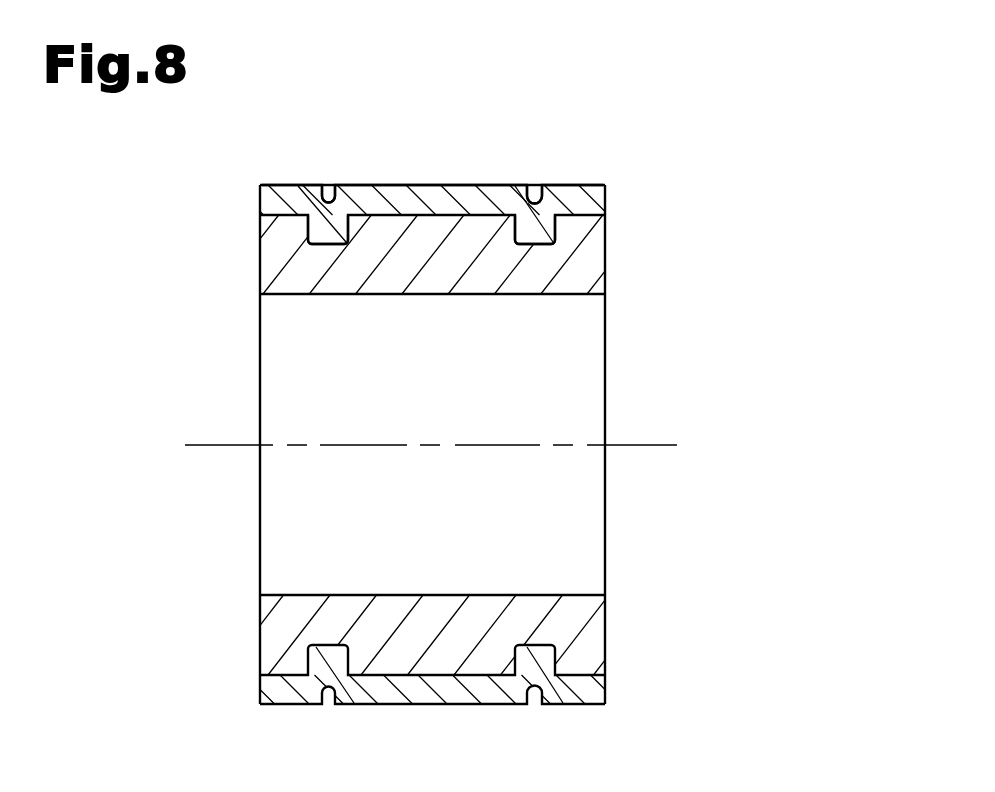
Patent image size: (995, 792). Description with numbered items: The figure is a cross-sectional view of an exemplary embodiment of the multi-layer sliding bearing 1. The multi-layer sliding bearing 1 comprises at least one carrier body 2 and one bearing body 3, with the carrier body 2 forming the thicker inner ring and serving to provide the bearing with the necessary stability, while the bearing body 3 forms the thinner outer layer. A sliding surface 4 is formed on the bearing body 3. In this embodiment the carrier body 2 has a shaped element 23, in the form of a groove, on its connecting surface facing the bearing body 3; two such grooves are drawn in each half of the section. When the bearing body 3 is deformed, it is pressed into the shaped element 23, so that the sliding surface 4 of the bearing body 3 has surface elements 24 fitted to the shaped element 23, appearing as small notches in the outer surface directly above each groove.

The multi-layer sliding bearing 1 is at (533, 365).
The carrier body 2 is at (682, 282).
The bearing body 3 is at (690, 200).
The sliding surface 4 is at (657, 126).
The shaped element 23 is at (220, 322).
The surface elements 24 is at (440, 130).